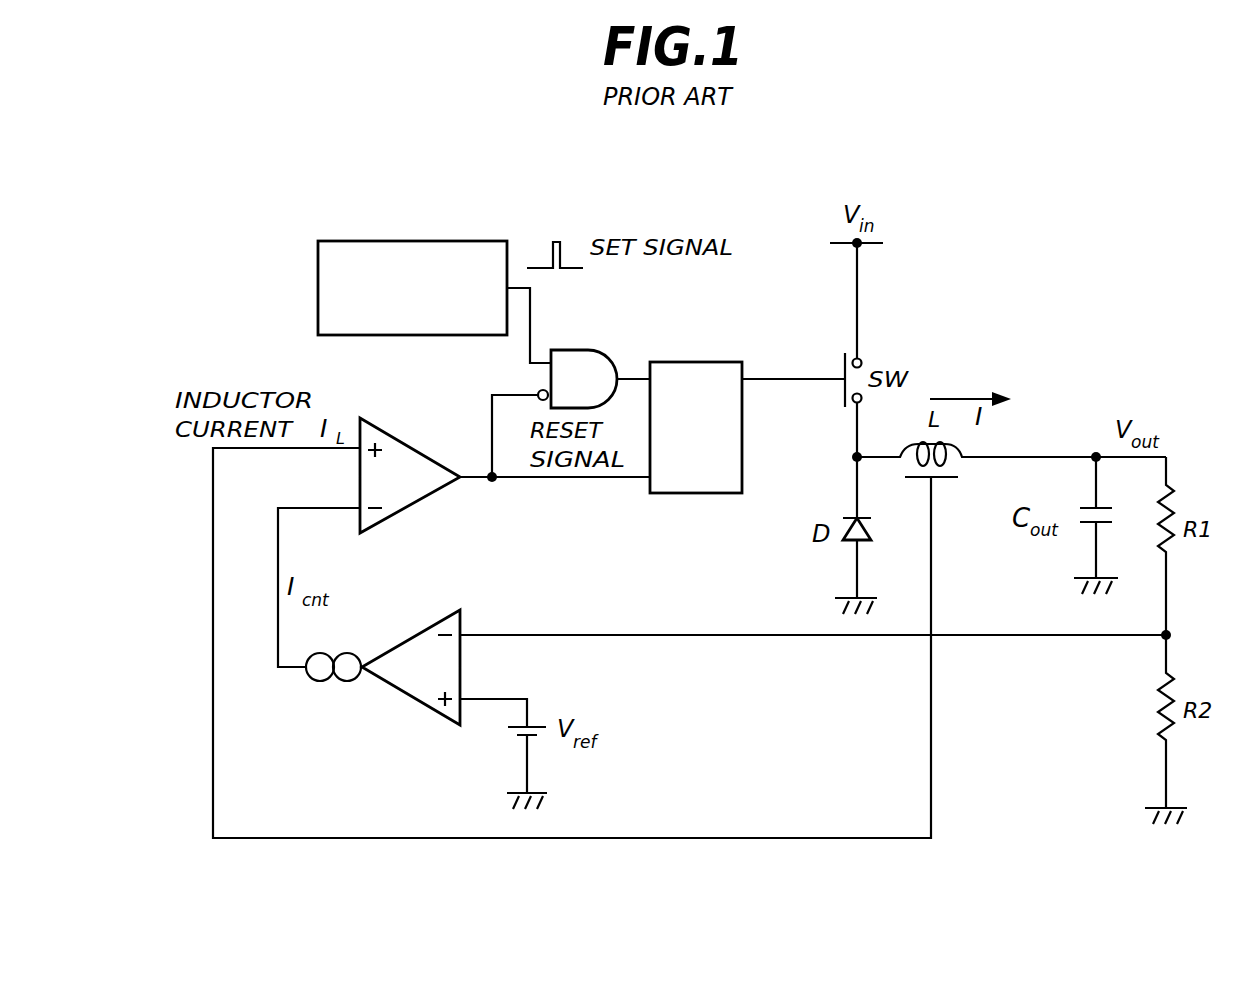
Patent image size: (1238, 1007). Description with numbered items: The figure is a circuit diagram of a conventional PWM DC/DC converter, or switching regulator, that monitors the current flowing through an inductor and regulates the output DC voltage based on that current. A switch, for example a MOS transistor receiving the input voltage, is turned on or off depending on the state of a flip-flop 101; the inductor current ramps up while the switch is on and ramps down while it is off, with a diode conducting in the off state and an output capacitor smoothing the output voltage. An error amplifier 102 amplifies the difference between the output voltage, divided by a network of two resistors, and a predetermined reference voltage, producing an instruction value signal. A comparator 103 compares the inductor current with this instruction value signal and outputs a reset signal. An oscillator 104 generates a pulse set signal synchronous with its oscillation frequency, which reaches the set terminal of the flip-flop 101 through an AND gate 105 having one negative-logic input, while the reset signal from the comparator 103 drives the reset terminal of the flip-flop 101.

The flip-flop 101 is at (692, 362).
The error amplifier 102 is at (440, 713).
The comparator 103 is at (414, 445).
The oscillator 104 is at (318, 283).
The AND gate 105 is at (573, 350).